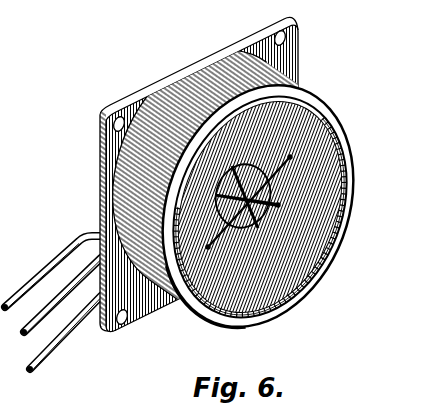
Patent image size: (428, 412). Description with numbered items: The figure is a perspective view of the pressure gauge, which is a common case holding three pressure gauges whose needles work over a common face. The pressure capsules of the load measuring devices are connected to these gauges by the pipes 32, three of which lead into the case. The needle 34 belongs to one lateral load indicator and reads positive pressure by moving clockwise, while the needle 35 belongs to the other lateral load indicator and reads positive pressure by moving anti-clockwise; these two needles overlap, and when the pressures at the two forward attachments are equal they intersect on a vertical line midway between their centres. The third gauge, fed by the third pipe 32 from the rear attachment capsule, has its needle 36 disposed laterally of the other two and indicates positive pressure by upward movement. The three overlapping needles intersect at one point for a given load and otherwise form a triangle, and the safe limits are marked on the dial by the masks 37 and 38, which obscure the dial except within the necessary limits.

The pipes 32 is at (39, 274).
The needle 34 is at (192, 303).
The needle 35 is at (303, 276).
The needle 36 is at (268, 172).
The mask 37 is at (255, 312).
The mask 38 is at (219, 196).